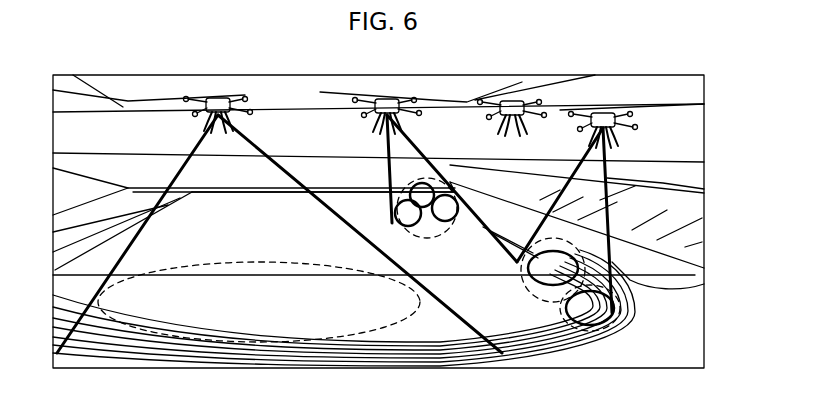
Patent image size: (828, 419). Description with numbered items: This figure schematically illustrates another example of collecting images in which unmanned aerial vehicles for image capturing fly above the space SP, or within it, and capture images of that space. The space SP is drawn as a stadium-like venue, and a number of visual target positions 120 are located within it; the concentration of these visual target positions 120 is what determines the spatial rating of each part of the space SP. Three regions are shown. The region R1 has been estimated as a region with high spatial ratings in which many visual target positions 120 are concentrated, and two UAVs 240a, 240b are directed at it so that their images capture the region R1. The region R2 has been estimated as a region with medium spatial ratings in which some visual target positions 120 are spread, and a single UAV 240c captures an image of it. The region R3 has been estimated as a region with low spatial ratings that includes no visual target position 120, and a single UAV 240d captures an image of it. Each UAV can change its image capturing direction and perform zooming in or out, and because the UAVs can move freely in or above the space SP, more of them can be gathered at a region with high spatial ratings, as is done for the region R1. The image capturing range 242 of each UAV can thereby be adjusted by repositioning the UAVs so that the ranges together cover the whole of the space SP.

The unmanned aerial vehicle 240a is at (389, 97).
The unmanned aerial vehicle 240b is at (514, 99).
The unmanned aerial vehicle 240c is at (628, 122).
The unmanned aerial vehicle 240d is at (228, 98).
The space SP is at (268, 201).
The image capturing range 242 is at (704, 189).
The visual target position 120 is at (703, 285).
The region R1 is at (392, 226).
The region R2 is at (523, 283).
The region R3 is at (123, 340).